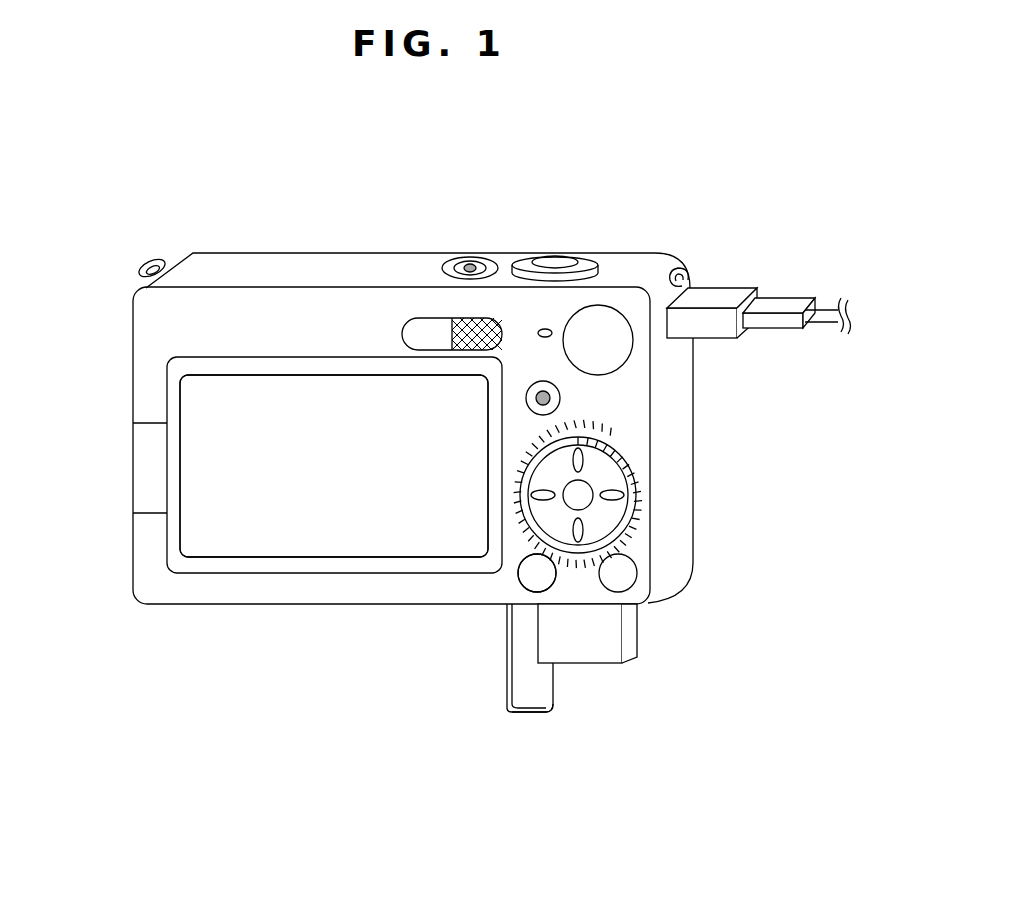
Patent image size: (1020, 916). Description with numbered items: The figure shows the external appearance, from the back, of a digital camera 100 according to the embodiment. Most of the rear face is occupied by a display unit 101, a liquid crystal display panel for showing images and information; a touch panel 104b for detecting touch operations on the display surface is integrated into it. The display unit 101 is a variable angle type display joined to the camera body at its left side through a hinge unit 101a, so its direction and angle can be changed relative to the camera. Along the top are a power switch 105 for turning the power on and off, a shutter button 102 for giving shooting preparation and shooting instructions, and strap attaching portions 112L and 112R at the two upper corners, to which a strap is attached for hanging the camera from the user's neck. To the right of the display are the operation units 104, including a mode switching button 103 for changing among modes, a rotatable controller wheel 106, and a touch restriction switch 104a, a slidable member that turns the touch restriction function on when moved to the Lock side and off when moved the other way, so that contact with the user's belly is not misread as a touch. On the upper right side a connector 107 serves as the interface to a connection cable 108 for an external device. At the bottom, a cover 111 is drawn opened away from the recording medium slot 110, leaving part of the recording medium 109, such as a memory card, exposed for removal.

The digital camera 100 is at (210, 641).
The display unit 101 is at (252, 387).
The hinge unit 101a is at (146, 463).
The touch panel 104b is at (334, 466).
The shutter button 102 is at (553, 258).
The mode switching button 103 is at (621, 351).
The operation units 104 is at (588, 260).
The touch restriction switch 104a is at (453, 323).
The power switch 105 is at (469, 257).
The controller wheel 106 is at (550, 565).
The connector 107 is at (714, 298).
The connection cable 108 is at (783, 305).
The recording medium 109 is at (600, 655).
The recording medium slot 110 is at (550, 613).
The cover 111 is at (530, 714).
The strap attaching portion 112L is at (150, 262).
The strap attaching portion 112R is at (683, 266).